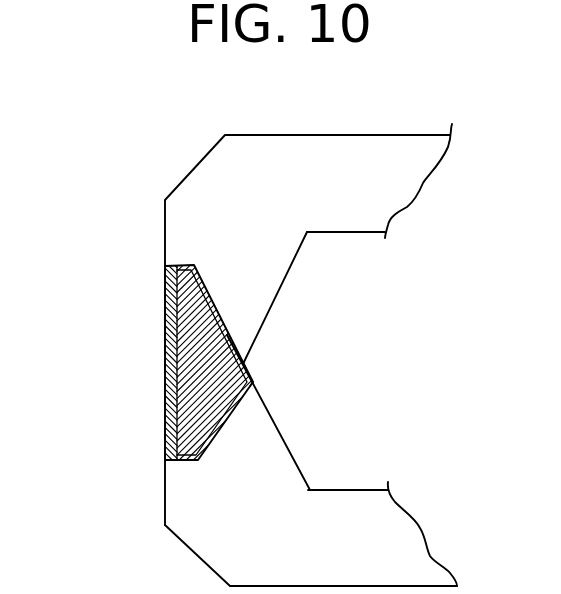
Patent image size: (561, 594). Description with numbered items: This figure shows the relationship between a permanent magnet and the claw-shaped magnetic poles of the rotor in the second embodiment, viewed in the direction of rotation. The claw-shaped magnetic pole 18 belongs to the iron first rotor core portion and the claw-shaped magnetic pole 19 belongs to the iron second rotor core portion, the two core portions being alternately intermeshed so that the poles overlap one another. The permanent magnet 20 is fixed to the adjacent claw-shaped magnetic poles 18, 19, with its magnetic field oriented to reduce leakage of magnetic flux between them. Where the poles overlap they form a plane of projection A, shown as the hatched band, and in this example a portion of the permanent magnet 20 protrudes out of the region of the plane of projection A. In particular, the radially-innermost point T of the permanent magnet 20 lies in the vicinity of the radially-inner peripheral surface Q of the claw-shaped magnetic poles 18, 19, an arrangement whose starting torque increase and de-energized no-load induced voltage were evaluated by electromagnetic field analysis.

The claw-shaped magnetic pole 18 is at (213, 190).
The claw-shaped magnetic pole 19 is at (208, 521).
The permanent magnet 20 is at (190, 338).
The plane of projection A is at (167, 388).
The radially-innermost point T is at (253, 383).
The radially-inner peripheral surface Q is at (283, 439).